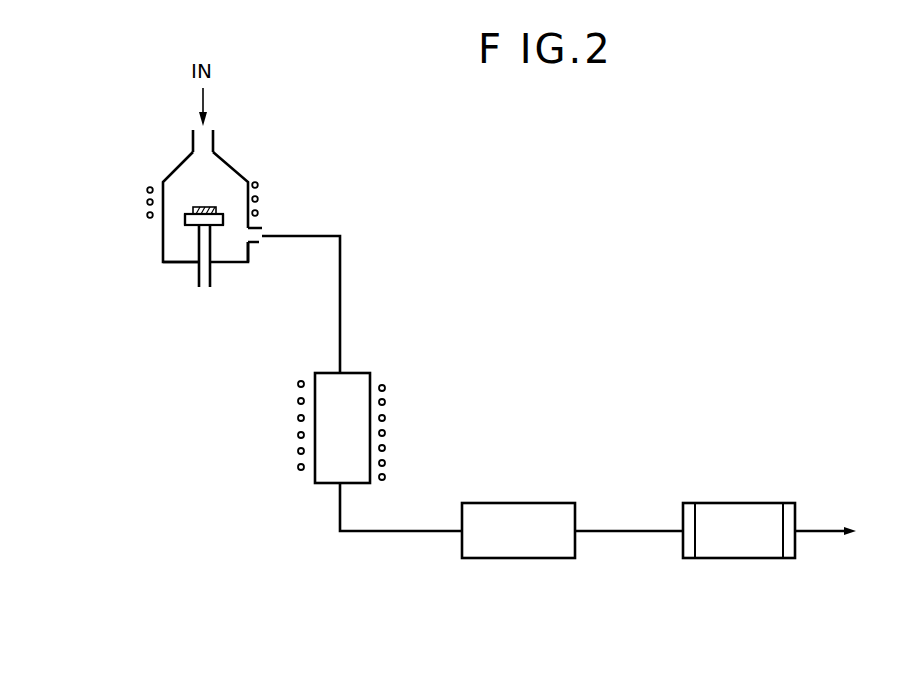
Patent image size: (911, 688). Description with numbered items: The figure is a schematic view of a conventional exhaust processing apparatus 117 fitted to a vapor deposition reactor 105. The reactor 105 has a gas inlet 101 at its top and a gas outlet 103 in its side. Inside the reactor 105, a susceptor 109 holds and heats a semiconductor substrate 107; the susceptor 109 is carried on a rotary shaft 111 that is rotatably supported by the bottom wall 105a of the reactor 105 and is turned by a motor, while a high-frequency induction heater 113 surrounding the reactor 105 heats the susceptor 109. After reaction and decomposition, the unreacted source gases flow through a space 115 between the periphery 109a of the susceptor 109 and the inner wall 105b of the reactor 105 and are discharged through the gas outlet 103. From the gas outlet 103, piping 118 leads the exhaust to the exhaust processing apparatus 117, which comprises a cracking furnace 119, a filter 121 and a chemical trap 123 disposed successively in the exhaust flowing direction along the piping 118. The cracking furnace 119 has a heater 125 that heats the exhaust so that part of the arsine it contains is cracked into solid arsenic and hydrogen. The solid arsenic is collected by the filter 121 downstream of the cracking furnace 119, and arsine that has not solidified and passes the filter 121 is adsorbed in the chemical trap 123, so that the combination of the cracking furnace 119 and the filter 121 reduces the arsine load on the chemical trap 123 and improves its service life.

The gas inlet 101 is at (208, 139).
The gas outlet 103 is at (252, 242).
The reactor 105 is at (162, 250).
The bottom wall 105a is at (178, 263).
The inner wall 105b is at (247, 227).
The semiconductor substrate 107 is at (208, 208).
The susceptor 109 is at (186, 219).
The periphery of the susceptor 109a is at (223, 222).
The rotary shaft 111 is at (213, 270).
The high-frequency induction heater 113 is at (145, 182).
The space 115 is at (227, 230).
The exhaust processing apparatus 117 is at (438, 462).
The piping 118 is at (340, 300).
The cracking furnace 119 is at (323, 484).
The filter 121 is at (532, 503).
The chemical trap 123 is at (711, 503).
The heater 125 is at (385, 418).